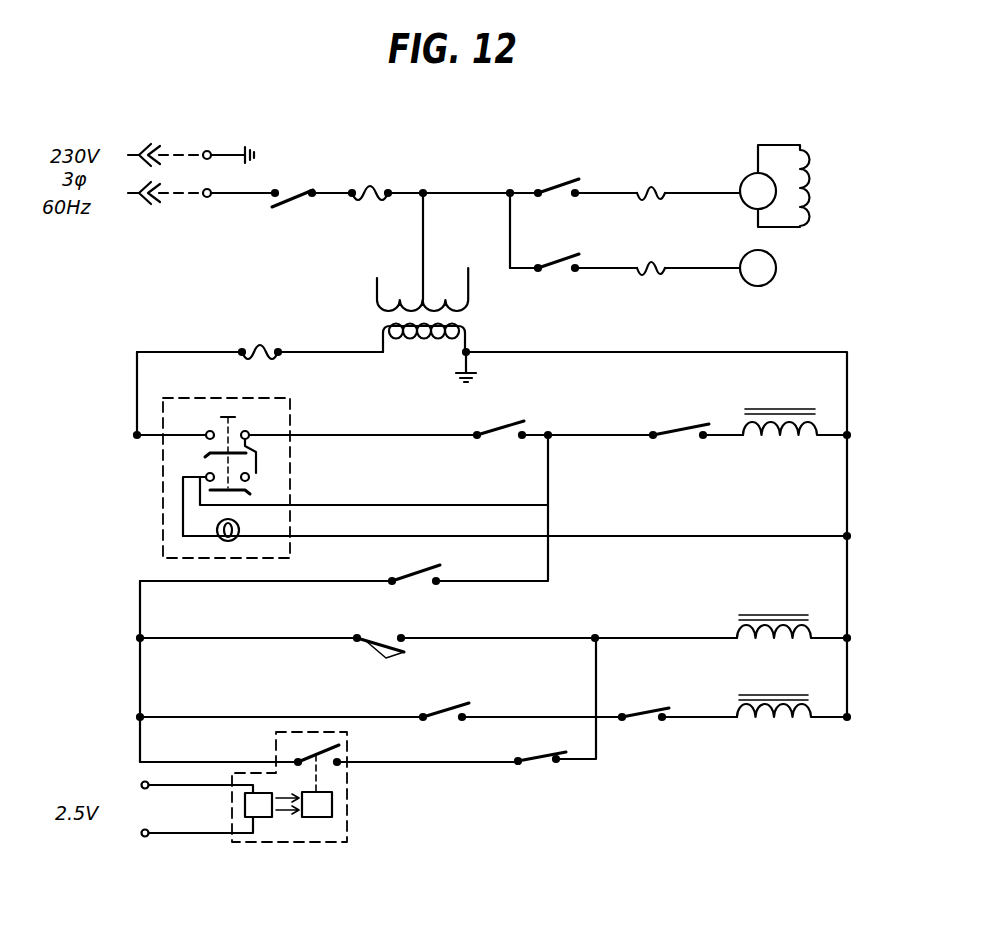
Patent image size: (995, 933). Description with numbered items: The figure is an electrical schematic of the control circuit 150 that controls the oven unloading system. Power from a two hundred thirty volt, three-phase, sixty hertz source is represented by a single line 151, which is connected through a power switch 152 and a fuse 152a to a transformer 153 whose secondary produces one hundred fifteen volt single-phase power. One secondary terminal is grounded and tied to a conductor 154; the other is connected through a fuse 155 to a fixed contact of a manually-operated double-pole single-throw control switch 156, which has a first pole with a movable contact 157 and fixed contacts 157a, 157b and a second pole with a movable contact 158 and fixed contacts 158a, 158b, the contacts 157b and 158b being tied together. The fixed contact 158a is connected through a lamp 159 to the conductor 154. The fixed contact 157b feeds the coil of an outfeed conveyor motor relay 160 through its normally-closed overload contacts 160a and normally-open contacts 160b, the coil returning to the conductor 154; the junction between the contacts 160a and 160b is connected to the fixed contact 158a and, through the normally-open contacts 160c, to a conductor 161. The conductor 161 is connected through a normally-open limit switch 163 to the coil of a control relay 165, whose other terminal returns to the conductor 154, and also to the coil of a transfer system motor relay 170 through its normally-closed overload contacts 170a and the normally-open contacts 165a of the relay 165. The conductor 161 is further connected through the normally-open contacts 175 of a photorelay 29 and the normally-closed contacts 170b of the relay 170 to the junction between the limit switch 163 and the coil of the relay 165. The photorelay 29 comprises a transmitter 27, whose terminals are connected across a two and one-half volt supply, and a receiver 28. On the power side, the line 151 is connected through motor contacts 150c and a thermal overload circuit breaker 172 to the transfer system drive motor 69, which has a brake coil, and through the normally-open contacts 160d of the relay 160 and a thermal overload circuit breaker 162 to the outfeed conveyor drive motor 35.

The electrical control circuit 150 is at (520, 108).
The line 151 is at (467, 191).
The power switch 152 is at (292, 199).
The fuse 152a is at (369, 189).
The motor starter contacts 150c is at (553, 185).
The thermal overload circuit breaker 172 is at (655, 185).
The transfer system drive motor 69 is at (752, 175).
The normally-open contacts 160d is at (553, 261).
The thermal overload circuit breaker 162 is at (672, 262).
The outfeed conveyor drive motor 35 is at (777, 268).
The transformer 153 is at (364, 326).
The conductor 154 is at (686, 351).
The fuse 155 is at (264, 351).
The control switch 156 is at (297, 431).
The movable contact 157 is at (207, 454).
The fixed contact 157a is at (208, 432).
The fixed contact 157b is at (256, 422).
The movable contact 158 is at (246, 495).
The fixed contact 158a is at (205, 477).
The fixed contact 158b is at (250, 475).
The lamp 159 is at (240, 528).
The outfeed conveyor motor relay 160 is at (771, 443).
The normally-closed overload contacts 160a is at (682, 428).
The normally-open contacts 160b is at (512, 428).
The normally-open contacts 160c is at (398, 579).
The conductor 161 is at (139, 605).
The limit switch 163 is at (372, 651).
The control relay 165 is at (775, 643).
The normally-open contacts 165a is at (441, 706).
The transfer system motor relay 170 is at (778, 723).
The normally-closed overload contacts 170a is at (645, 713).
The normally-closed contacts 170b is at (545, 763).
The normally-open contacts 175 is at (300, 753).
The transmitter 27 is at (265, 818).
The receiver 28 is at (333, 805).
The photorelay 29 is at (318, 844).